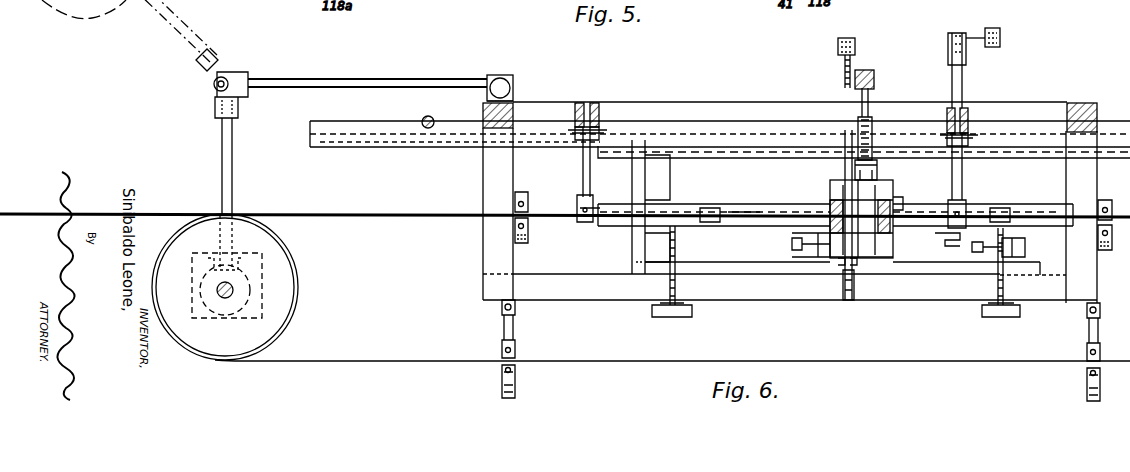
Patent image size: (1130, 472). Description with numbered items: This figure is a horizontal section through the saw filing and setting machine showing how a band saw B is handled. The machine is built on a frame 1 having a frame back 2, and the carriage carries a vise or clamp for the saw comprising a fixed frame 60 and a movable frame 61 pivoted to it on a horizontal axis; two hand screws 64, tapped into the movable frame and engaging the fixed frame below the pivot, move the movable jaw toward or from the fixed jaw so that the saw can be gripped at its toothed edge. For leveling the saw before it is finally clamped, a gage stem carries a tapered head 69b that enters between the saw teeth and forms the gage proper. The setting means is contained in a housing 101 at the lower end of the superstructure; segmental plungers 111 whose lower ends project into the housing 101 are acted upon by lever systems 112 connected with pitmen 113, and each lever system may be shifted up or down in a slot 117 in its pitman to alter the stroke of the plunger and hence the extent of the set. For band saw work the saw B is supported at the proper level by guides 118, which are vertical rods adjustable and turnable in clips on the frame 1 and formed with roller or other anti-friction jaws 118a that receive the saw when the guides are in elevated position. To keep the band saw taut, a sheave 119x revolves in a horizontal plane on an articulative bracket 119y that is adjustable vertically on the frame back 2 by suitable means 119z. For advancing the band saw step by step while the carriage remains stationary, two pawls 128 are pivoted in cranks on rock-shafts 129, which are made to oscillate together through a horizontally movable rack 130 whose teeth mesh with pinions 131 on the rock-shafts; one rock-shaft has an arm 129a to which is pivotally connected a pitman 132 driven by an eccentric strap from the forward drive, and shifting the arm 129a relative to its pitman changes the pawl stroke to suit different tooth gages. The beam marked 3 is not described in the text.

The frame 1 is at (1113, 208).
The frame back 2 is at (1079, 105).
The beam 3 is at (1012, 132).
The fixed frame 60 is at (632, 190).
The movable frame 61 is at (632, 255).
The hand screws 64 is at (684, 318).
The tapered head 69b is at (952, 244).
The housing 101 is at (893, 252).
The segmental plungers 111 is at (877, 165).
The lever systems 112 is at (858, 112).
The pitmen 113 is at (856, 52).
The slot 117 is at (843, 285).
The guides 118 is at (528, 234).
The anti-friction jaws 118a is at (515, 368).
The sheave 119x is at (298, 285).
The articulative bracket 119y is at (248, 95).
The suitable means 119z is at (502, 77).
The pawls 128 is at (686, 205).
The rock-shafts 129 is at (590, 178).
The arm 129a is at (975, 42).
The horizontal rack 130 is at (768, 128).
The pinions 131 is at (599, 130).
The pitman 132 is at (1000, 32).
The band saw B is at (418, 214).